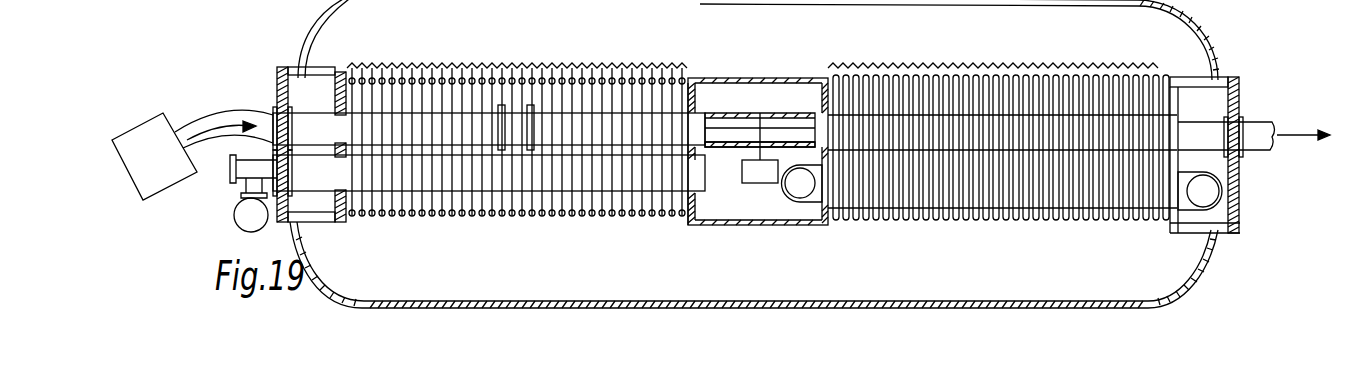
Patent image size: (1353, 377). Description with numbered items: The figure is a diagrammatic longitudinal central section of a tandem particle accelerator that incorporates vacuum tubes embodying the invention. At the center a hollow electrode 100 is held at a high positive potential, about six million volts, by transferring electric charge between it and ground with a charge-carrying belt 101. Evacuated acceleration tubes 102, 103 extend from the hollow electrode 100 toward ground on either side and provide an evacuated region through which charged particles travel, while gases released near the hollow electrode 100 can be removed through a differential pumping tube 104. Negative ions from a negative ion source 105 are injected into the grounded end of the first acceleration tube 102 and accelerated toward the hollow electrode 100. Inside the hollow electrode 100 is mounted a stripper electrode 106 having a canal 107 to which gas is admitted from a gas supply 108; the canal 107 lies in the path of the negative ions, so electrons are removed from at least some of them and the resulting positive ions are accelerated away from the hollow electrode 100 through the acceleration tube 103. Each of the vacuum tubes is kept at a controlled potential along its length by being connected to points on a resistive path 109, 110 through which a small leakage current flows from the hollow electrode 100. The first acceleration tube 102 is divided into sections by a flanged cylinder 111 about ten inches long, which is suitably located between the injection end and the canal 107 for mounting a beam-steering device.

The hollow electrode 100 is at (738, 63).
The charge-carrying belt 101 is at (815, 206).
The first acceleration tube 102 is at (478, 112).
The acceleration tube 103 is at (1000, 122).
The differential pumping tube 104 is at (440, 196).
The negative ion source 105 is at (157, 115).
The stripper electrode 106 is at (728, 148).
The canal 107 is at (760, 115).
The gas supply 108 is at (760, 182).
The resistive path 109 is at (395, 66).
The resistive path 110 is at (898, 67).
The flanged cylinder 111 is at (518, 128).